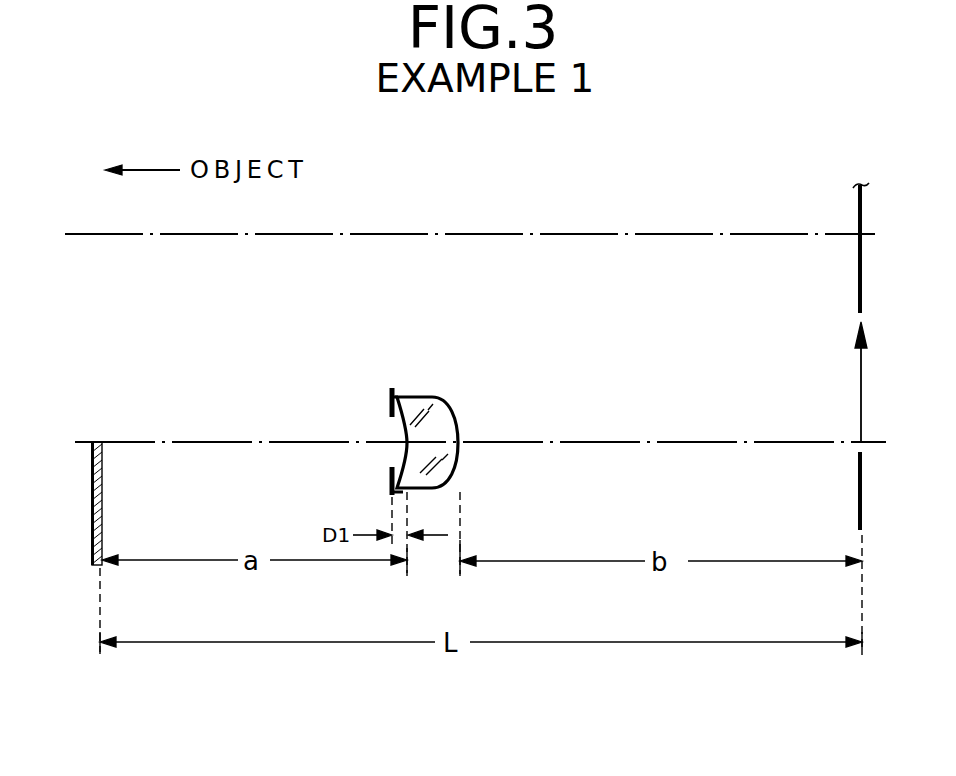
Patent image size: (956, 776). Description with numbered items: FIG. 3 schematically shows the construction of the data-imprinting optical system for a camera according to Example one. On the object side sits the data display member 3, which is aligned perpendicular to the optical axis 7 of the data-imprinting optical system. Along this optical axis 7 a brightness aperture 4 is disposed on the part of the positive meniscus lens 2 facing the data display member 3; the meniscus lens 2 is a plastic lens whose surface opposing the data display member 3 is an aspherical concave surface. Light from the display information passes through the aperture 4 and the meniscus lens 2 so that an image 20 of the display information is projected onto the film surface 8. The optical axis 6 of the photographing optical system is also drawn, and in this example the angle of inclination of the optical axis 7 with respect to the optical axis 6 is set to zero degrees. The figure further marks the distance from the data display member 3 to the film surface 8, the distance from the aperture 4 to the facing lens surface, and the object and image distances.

The positive meniscus lens 2 is at (433, 397).
The data display member 3 is at (103, 493).
The brightness aperture 4 is at (390, 398).
The optical axis of the photographing optical system 6 is at (317, 234).
The optical axis of the data-imprinting optical system 7 is at (238, 442).
The film surface 8 is at (857, 207).
The image of display information 20 is at (857, 378).